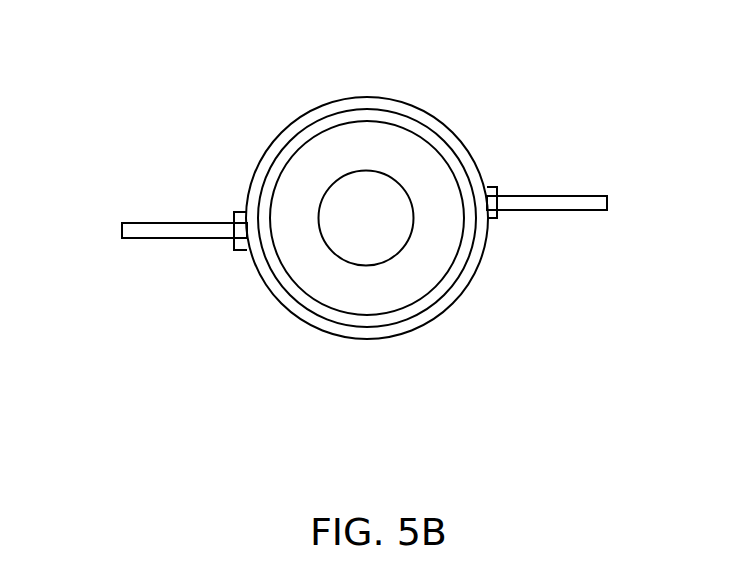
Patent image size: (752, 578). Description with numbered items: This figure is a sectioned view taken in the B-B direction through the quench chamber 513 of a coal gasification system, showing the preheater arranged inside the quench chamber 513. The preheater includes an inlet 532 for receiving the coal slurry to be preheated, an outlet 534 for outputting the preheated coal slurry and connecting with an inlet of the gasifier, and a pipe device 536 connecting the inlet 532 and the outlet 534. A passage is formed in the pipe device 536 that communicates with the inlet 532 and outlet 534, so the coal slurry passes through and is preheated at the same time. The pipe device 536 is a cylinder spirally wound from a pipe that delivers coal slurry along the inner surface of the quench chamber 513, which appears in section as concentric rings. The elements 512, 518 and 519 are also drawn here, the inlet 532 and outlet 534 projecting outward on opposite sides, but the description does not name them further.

The central opening 512 is at (365, 188).
The quench chamber 513 is at (255, 200).
The left mounting block 518 is at (224, 252).
The right mounting block 519 is at (512, 218).
The inlet 532 is at (112, 230).
The outlet 534 is at (621, 202).
The pipe device 536 is at (300, 310).